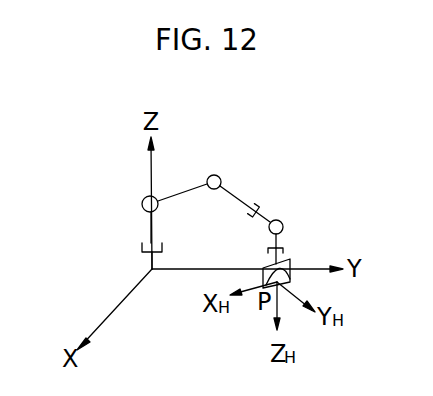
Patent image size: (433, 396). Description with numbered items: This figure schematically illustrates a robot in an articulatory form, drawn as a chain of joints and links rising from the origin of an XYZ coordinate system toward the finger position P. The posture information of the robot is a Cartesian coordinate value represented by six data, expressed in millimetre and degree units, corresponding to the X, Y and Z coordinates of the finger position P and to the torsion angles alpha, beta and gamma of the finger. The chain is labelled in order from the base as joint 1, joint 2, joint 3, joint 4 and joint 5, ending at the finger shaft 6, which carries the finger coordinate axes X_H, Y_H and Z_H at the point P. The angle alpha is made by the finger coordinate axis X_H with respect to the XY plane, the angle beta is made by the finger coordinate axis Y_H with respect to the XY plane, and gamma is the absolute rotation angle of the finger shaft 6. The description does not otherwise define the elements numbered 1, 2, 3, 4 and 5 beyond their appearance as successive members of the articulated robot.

The base joint 1 is at (170, 240).
The shoulder joint 2 is at (126, 207).
The elbow joint 3 is at (220, 169).
The forearm link joint 4 is at (265, 195).
The wrist joint 5 is at (287, 233).
The finger shaft 6 is at (262, 267).